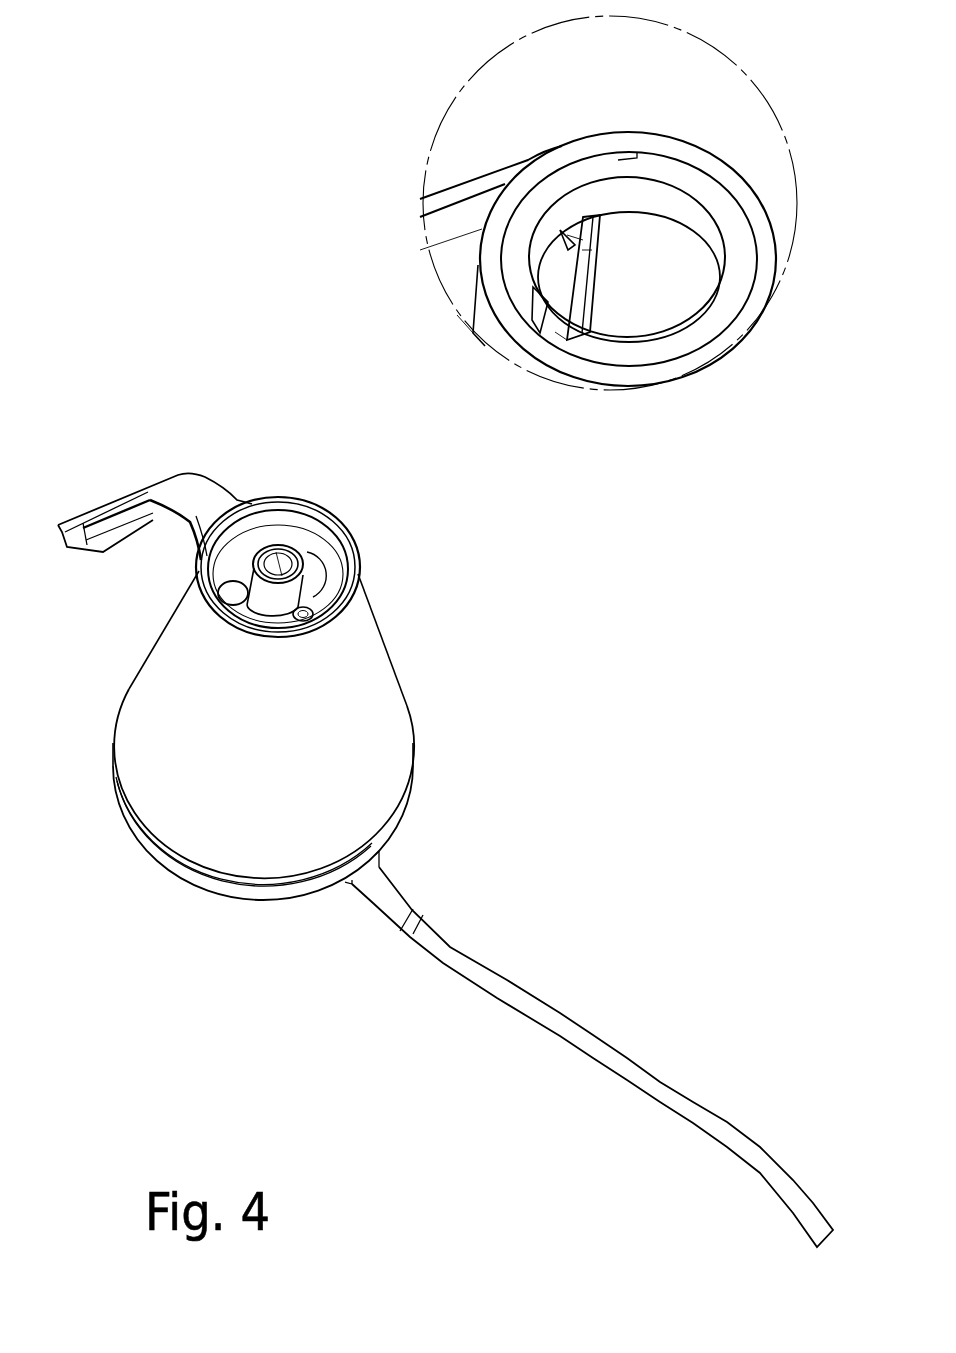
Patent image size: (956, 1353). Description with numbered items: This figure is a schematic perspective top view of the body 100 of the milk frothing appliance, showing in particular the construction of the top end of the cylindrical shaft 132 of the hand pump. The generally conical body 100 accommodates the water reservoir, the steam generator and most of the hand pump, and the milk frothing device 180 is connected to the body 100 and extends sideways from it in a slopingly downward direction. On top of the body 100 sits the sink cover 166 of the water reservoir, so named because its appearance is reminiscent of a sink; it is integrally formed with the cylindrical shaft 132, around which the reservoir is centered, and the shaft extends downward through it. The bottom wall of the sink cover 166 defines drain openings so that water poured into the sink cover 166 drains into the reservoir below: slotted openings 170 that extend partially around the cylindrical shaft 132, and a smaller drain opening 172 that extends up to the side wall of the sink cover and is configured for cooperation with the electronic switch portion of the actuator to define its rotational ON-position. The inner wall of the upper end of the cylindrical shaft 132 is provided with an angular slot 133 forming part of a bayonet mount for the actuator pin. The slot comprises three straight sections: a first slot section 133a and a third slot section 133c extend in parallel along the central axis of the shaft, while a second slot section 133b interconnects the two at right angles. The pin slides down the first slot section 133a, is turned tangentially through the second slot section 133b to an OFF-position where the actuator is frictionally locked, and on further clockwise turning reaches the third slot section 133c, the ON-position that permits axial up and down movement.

The body 100 is at (358, 680).
The cylindrical shaft 132 is at (297, 594).
The angular slot 133 is at (281, 562).
The first slot section 133a is at (555, 332).
The second slot section 133b is at (555, 243).
The third slot section 133c is at (582, 255).
The sink cover 166 is at (265, 537).
The slotted drain opening 170 is at (233, 594).
The drain opening 172 is at (328, 622).
The milk frothing device 180 is at (95, 494).